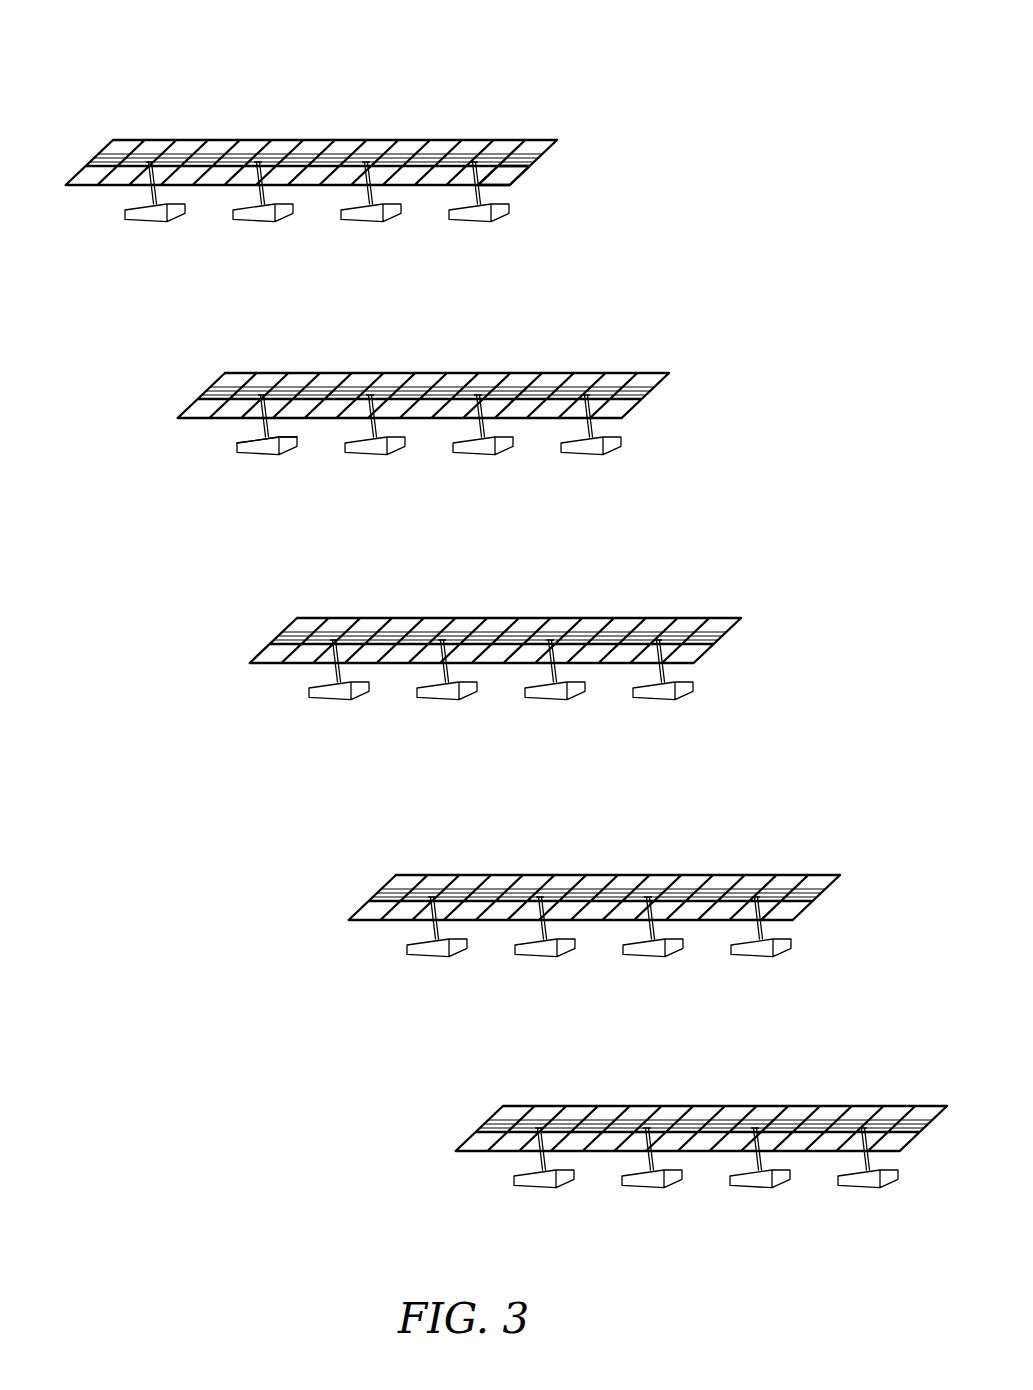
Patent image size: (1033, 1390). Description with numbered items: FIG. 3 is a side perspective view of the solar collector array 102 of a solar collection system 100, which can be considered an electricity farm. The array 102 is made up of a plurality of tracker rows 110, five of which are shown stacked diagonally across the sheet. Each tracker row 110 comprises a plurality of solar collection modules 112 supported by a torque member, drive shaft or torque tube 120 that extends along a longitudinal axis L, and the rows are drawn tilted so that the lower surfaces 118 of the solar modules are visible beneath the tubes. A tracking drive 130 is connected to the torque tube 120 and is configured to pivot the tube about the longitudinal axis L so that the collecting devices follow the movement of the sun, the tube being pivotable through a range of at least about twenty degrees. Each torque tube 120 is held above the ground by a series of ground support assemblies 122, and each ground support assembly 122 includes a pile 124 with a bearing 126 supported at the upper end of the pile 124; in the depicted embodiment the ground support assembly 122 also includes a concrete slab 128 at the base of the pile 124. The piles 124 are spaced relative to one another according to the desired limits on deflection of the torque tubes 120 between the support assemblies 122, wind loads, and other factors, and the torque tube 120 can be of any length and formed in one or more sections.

The solar collection system 100 is at (742, 58).
The solar collector array 102 is at (714, 243).
The tracker row 110 is at (378, 308).
The solar collection module 112 is at (158, 141).
The lower surface 118 is at (508, 184).
The torque tube 120 is at (533, 170).
The ground support assembly 122 is at (322, 476).
The pile 124 is at (253, 445).
The bearing 126 is at (258, 411).
The concrete slab 128 is at (272, 450).
The tracking drive 130 is at (375, 168).
The longitudinal axis L is at (642, 399).